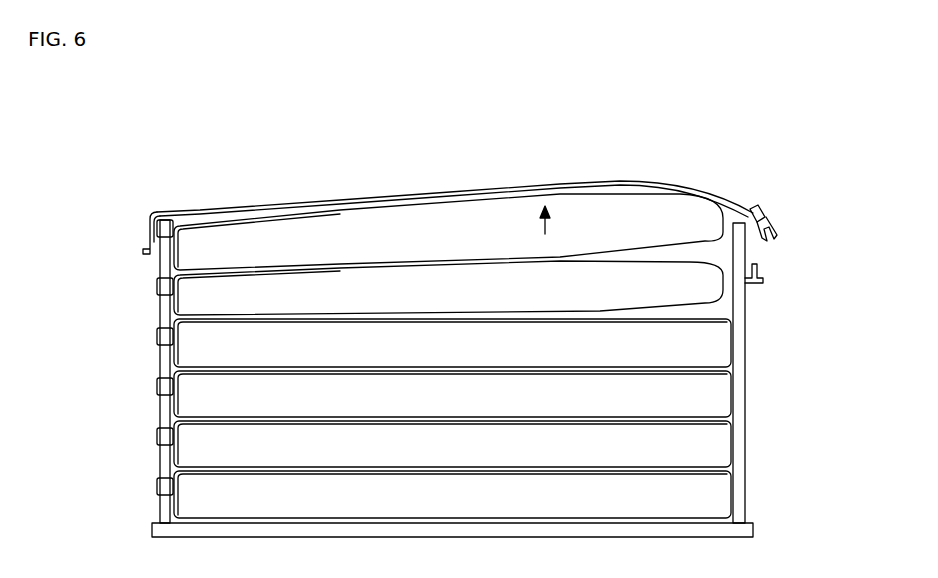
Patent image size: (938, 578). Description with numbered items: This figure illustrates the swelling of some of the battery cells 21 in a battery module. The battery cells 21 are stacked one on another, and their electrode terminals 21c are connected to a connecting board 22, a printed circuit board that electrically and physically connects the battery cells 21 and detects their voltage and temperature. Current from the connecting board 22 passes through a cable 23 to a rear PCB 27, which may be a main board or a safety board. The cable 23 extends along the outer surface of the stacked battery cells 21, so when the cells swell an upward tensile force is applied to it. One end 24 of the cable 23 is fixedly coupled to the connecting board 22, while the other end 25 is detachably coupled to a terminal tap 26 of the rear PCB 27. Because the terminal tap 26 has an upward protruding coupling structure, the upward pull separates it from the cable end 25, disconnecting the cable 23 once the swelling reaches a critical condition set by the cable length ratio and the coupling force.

The battery cell 21 is at (480, 234).
The electrode terminal 21c is at (157, 337).
The connecting board 22 is at (158, 453).
The cable 23 is at (444, 190).
The cable end 24 is at (150, 250).
The cable end 25 is at (768, 220).
The terminal tap 26 is at (765, 280).
The rear PCB 27 is at (745, 385).